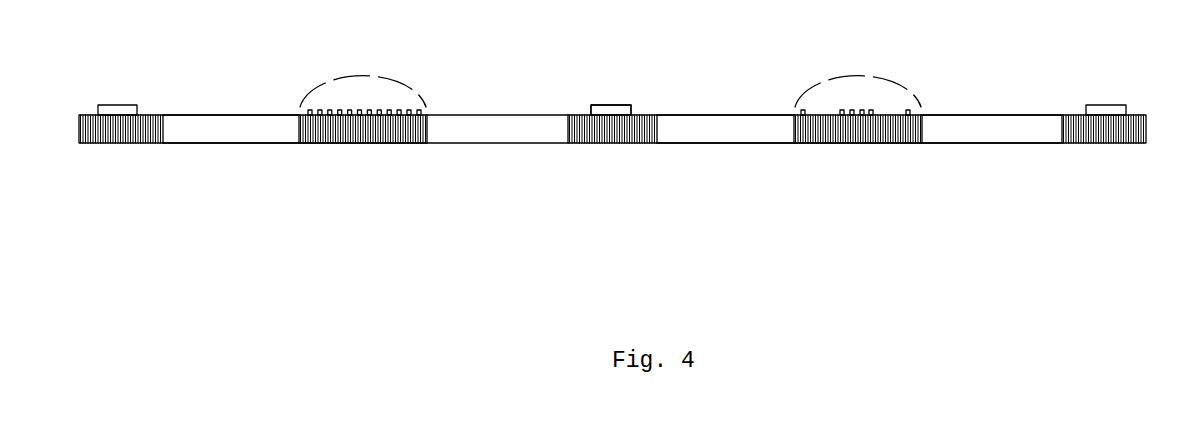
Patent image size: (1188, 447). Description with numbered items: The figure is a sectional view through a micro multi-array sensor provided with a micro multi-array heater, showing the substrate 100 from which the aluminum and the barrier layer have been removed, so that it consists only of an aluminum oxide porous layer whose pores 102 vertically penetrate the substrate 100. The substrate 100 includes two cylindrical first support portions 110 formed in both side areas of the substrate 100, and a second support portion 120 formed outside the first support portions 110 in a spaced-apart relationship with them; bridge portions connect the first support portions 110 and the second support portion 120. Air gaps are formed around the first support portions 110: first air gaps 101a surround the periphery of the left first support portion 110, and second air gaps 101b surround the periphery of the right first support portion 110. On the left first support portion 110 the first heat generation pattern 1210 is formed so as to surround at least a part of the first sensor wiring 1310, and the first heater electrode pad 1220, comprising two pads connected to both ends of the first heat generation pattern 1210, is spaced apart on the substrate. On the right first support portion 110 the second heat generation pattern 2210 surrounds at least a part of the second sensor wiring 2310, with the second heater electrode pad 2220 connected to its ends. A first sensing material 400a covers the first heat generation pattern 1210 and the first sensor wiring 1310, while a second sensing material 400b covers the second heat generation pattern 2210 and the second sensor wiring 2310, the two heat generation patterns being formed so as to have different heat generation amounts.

The substrate 100 is at (598, 153).
The first air gaps 101a is at (235, 130).
The second air gaps 101b is at (730, 130).
The pores 102 is at (330, 136).
The first support portions 110 is at (378, 138).
The second support portion 120 is at (114, 143).
The first heat generation pattern 1210 is at (330, 110).
The first heater electrode pad 1220 is at (120, 108).
The first sensor wiring 1310 is at (368, 112).
The second heat generation pattern 2210 is at (880, 110).
The second heater electrode pad 2220 is at (1104, 108).
The second sensor wiring 2310 is at (862, 112).
The first sensing material 400a is at (408, 88).
The second sensing material 400b is at (812, 88).